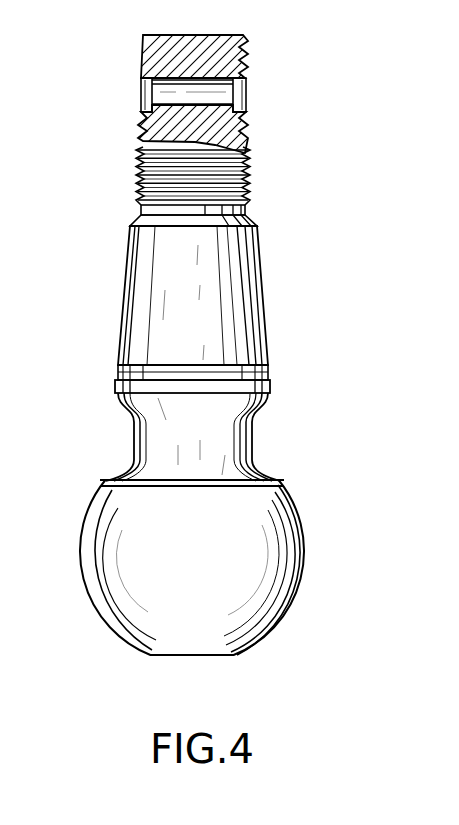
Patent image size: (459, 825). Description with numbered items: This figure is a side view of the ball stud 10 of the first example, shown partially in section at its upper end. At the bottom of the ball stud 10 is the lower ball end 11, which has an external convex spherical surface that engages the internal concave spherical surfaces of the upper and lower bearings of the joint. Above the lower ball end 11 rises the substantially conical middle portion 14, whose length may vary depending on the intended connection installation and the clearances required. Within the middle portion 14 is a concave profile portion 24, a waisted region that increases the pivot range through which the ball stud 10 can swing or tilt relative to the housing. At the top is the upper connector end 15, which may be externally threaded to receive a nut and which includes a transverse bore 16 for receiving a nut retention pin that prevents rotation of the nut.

The ball stud 10 is at (278, 268).
The lower ball end 11 is at (305, 553).
The conical middle portion 14 is at (266, 335).
The upper connector end 15 is at (248, 52).
The transverse bore 16 is at (148, 93).
The concave profile portion 24 is at (262, 447).